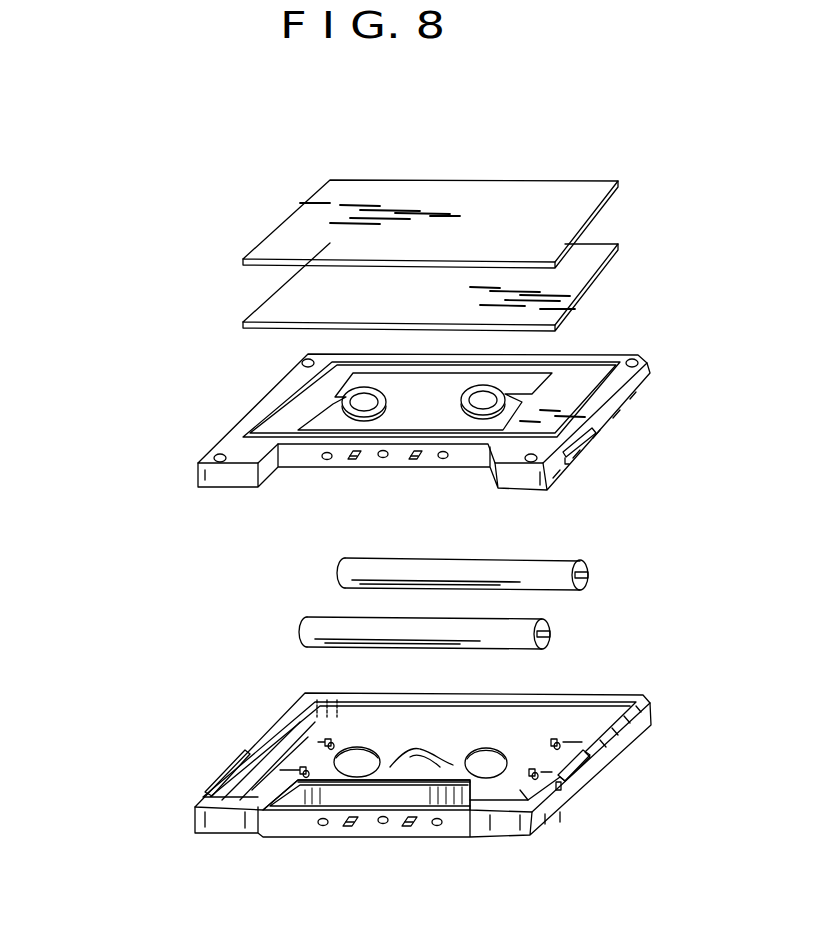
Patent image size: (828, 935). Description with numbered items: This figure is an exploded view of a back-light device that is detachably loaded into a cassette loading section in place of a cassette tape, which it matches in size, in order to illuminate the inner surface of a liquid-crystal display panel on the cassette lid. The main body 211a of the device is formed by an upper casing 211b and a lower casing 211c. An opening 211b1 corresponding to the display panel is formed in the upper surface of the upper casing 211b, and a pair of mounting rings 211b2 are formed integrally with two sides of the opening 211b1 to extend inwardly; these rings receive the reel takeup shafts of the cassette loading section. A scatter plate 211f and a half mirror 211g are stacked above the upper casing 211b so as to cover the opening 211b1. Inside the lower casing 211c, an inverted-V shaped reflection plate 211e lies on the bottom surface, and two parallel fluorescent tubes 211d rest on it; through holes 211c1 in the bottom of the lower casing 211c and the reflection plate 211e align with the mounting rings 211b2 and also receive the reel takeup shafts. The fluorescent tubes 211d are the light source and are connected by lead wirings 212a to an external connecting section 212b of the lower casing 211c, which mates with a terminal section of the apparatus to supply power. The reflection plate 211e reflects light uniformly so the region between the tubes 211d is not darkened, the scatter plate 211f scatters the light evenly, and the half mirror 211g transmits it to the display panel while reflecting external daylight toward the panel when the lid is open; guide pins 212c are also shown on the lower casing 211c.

The main body 211a is at (112, 432).
The upper casing 211b is at (193, 465).
The opening 211b1 is at (405, 423).
The mounting rings 211b2 is at (562, 347).
The lower casing 211c is at (192, 800).
The through holes 211c1 is at (467, 782).
The fluorescent tubes 211d is at (545, 630).
The reflection plate 211e is at (417, 747).
The scatter plate 211f is at (603, 255).
The half mirror 211g is at (540, 190).
The lead wirings 212a is at (268, 772).
The external connecting section 212b is at (340, 690).
The guide pins 212c is at (301, 767).